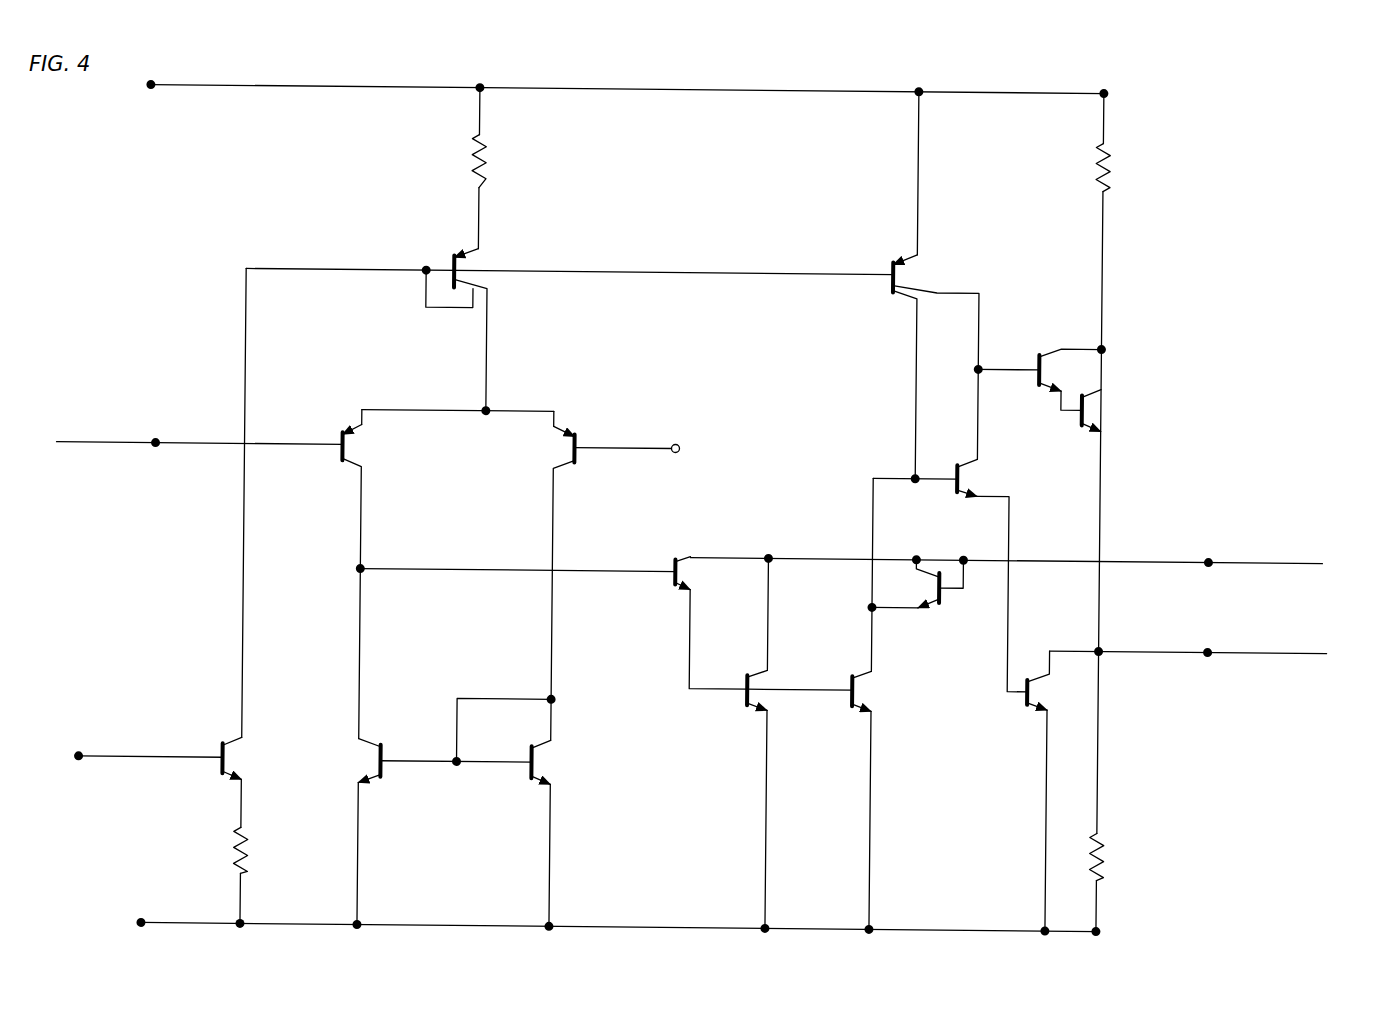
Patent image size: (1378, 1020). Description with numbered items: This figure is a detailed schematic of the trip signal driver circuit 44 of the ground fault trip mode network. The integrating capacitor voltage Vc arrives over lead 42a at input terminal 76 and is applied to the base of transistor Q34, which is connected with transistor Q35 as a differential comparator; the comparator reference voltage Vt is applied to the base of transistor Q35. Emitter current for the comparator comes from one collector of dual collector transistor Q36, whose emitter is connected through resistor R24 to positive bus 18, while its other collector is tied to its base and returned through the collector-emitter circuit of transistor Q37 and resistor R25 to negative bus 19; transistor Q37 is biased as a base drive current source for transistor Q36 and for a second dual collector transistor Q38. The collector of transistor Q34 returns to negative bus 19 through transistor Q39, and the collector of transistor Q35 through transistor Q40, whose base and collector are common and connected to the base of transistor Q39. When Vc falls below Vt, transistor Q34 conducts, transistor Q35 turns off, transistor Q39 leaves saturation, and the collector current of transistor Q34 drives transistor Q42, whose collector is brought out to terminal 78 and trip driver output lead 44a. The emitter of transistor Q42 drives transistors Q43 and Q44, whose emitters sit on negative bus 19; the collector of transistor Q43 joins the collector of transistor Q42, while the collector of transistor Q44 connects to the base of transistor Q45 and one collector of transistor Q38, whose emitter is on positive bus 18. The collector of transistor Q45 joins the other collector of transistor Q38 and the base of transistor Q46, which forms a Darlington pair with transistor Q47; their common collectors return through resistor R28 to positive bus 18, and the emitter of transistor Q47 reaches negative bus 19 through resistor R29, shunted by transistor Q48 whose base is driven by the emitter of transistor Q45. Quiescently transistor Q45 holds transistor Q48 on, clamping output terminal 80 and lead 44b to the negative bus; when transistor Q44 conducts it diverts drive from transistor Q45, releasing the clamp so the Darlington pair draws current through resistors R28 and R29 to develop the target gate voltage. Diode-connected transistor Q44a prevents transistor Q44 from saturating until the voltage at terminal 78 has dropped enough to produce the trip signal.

The positive bus 18 is at (608, 89).
The negative bus 19 is at (622, 928).
The trip signal driver circuit 44 is at (193, 322).
The lead 42a is at (99, 447).
The input terminal 76 is at (155, 451).
The trip driver circuit output lead 44a is at (1299, 557).
The terminal 78 is at (1208, 561).
The lead 44b is at (1300, 647).
The output terminal 80 is at (1208, 651).
The resistor R24 is at (482, 171).
The resistor R25 is at (250, 859).
The resistor R28 is at (1106, 167).
The resistor R29 is at (1106, 857).
The transistor Q34 is at (352, 463).
The transistor Q35 is at (571, 466).
The dual collector transistor Q36 is at (466, 258).
The transistor Q37 is at (230, 777).
The dual collector transistor Q38 is at (905, 258).
The transistor Q39 is at (372, 779).
The transistor Q40 is at (540, 779).
The transistor Q42 is at (689, 590).
The transistor Q43 is at (752, 708).
The transistor Q44 is at (844, 703).
The diode-connected transistor Q44a is at (934, 592).
The transistor Q45 is at (965, 491).
The transistor Q46 is at (1047, 386).
The transistor Q47 is at (1084, 427).
The transistor Q48 is at (1031, 712).